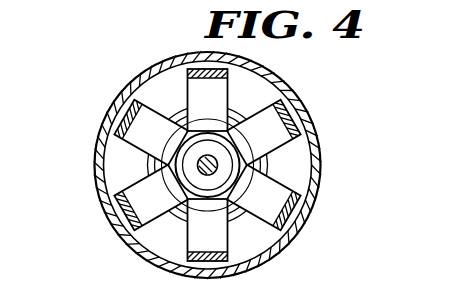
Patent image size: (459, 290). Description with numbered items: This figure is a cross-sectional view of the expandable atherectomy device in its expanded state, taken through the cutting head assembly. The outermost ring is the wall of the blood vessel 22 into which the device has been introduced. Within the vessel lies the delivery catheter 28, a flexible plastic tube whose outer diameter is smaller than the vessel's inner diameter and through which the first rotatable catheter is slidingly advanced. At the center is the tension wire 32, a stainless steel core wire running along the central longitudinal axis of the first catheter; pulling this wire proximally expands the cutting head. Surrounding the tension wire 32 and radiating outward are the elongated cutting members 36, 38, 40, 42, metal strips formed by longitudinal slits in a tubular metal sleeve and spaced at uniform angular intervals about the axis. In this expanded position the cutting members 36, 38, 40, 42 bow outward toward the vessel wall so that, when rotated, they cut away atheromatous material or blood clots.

The blood vessel 22 is at (310, 122).
The delivery catheter 28 is at (243, 196).
The tension wire 32 is at (306, 140).
The cutting member 36 is at (206, 60).
The cutting member 38 is at (122, 110).
The cutting member 40 is at (122, 198).
The cutting member 42 is at (175, 266).